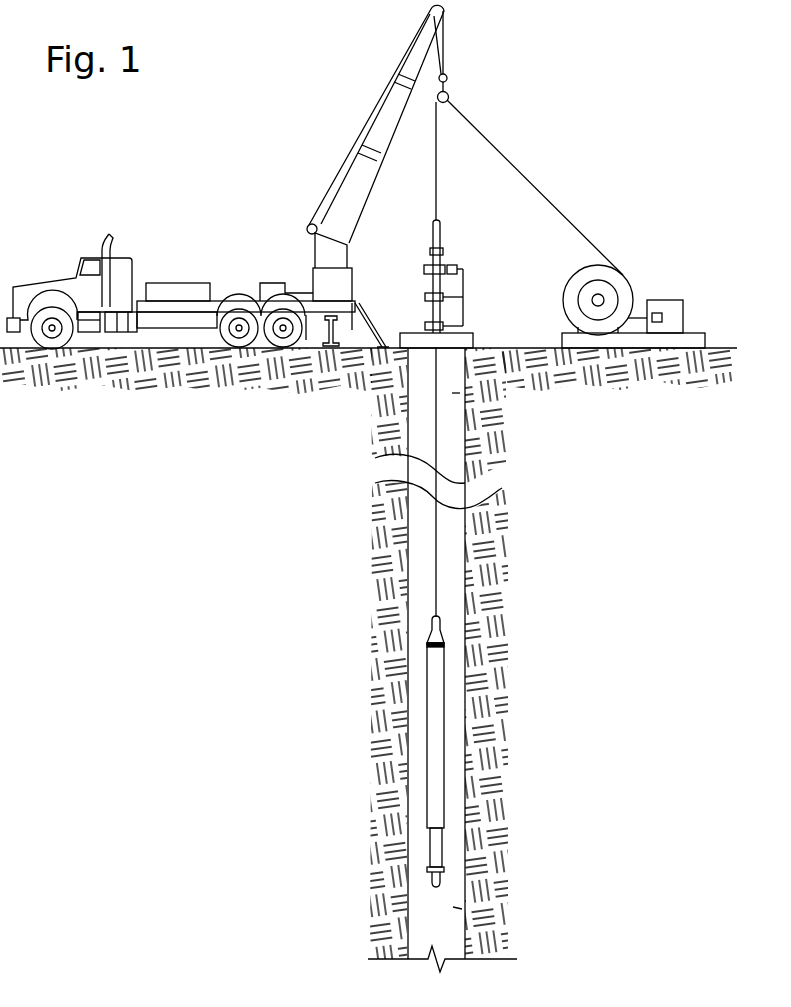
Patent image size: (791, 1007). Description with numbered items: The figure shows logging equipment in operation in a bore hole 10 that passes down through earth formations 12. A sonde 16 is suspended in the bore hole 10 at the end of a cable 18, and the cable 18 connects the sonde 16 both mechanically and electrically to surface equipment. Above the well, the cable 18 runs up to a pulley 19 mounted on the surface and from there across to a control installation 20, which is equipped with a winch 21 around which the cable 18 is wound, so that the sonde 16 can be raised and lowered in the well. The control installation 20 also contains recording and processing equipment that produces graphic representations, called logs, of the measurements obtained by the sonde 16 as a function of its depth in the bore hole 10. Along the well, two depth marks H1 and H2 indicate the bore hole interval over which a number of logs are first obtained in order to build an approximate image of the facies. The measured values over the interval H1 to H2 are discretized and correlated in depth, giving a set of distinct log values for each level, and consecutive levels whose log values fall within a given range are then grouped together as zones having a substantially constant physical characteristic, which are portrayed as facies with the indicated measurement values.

The bore hole 10 is at (447, 560).
The earth formations 12 is at (492, 652).
The sonde 16 is at (435, 703).
The cable 18 is at (437, 195).
The pulley 19 is at (448, 94).
The control installation 20 is at (668, 305).
The winch 21 is at (622, 283).
The upper limit of bore hole interval H1 is at (452, 393).
The lower limit of bore hole interval H2 is at (453, 907).